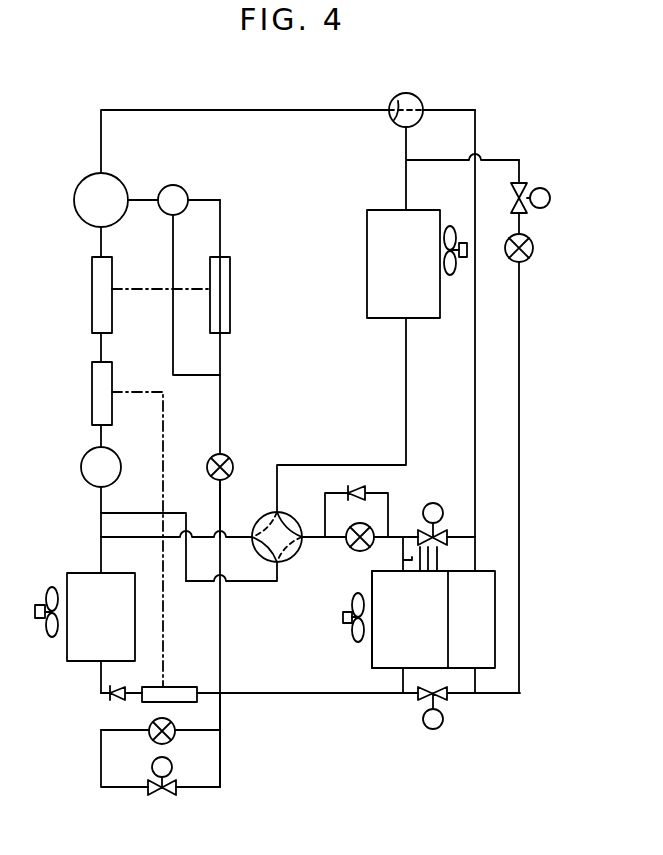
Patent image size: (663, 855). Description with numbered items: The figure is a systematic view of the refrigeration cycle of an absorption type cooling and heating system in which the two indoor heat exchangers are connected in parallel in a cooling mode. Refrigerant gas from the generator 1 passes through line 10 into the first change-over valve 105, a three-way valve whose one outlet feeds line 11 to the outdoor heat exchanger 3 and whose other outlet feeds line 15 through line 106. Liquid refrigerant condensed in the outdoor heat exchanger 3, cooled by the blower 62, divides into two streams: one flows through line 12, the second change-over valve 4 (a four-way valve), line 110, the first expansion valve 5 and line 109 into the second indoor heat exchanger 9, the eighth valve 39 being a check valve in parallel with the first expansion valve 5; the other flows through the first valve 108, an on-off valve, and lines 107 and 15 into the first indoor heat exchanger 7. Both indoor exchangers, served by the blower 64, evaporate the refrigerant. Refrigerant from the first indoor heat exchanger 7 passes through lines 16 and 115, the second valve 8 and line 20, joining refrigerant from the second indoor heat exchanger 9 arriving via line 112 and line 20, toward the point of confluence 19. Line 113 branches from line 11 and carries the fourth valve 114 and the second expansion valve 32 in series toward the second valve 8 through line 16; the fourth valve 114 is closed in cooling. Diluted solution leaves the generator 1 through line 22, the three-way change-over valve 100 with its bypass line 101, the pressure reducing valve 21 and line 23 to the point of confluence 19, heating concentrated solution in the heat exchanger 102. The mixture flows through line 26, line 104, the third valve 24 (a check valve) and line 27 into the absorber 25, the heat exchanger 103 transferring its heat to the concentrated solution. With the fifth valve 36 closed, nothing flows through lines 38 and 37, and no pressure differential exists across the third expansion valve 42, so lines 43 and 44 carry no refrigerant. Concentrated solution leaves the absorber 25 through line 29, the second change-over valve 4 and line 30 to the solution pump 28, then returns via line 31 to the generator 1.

The generator 1 is at (80, 185).
The outdoor heat exchanger 3 is at (367, 240).
The second change-over valve 4 is at (296, 517).
The first expansion valve 5 is at (353, 526).
The first indoor heat exchanger 7 is at (497, 610).
The second valve 8 is at (445, 722).
The second indoor heat exchanger 9 is at (382, 572).
The line 10 is at (238, 110).
The line 11 is at (406, 147).
The line 12 is at (357, 464).
The line 15 is at (477, 558).
The line 16 is at (480, 680).
The point of confluence 19 is at (222, 698).
The line 20 is at (318, 695).
The pressure reducing valve 21 is at (230, 461).
The line 22 is at (222, 220).
The line 23 is at (220, 503).
The third valve 24 is at (119, 702).
The absorber 25 is at (88, 572).
The line 26 is at (222, 755).
The line 27 is at (100, 680).
The solution pump 28 is at (82, 462).
The line 29 is at (101, 536).
The line 30 is at (237, 583).
The line 31 is at (100, 242).
The second expansion valve 32 is at (534, 252).
The fifth valve 36 is at (163, 796).
The line 37 is at (130, 790).
The line 38 is at (203, 790).
The eighth valve 39 is at (365, 491).
The third expansion valve 42 is at (170, 722).
The line 43 is at (182, 736).
The line 44 is at (140, 732).
The blower 62 is at (50, 590).
The blower 64 is at (356, 635).
The three-way change-over valve 100 is at (188, 192).
The line 101 is at (173, 345).
The heat exchanger 102 is at (92, 295).
The heat exchanger 103 is at (92, 397).
The line 104 is at (207, 692).
The first change-over valve 105 is at (418, 98).
The line 106 is at (460, 110).
The line 107 is at (463, 535).
The first valve 108 is at (445, 512).
The line 109 is at (412, 528).
The line 110 is at (318, 540).
The line 112 is at (400, 684).
The line 113 is at (522, 505).
The fourth valve 114 is at (531, 185).
The line 115 is at (455, 696).